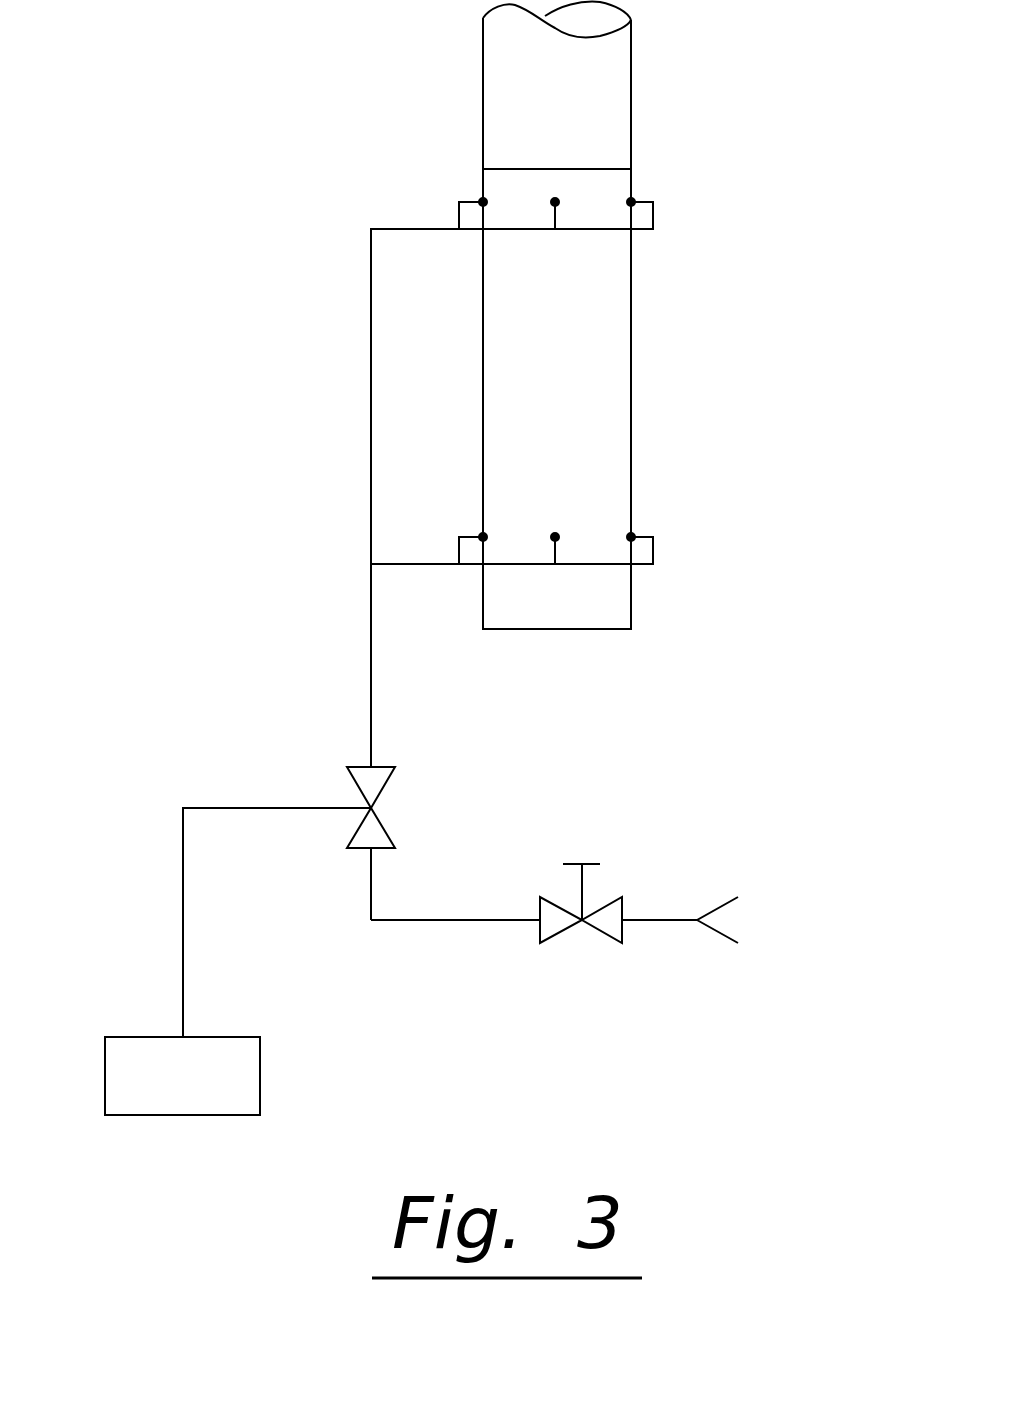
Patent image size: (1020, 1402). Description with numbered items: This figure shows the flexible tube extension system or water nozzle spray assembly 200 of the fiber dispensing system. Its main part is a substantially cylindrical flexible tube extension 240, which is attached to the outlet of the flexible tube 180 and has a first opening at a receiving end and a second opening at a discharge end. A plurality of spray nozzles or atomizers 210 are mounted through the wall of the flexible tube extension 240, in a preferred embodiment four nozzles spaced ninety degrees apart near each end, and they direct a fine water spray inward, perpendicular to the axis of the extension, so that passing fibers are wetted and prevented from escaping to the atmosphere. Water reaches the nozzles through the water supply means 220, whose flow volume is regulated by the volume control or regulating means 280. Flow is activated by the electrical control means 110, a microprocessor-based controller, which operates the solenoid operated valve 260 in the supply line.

The electrical control means 110 is at (257, 1050).
The pipe 180 is at (617, 70).
The flexible tube extension system 200 is at (680, 313).
The spray nozzles or atomizers 210 is at (483, 202).
The water supply means 220 is at (371, 390).
The flexible tube extension 240 is at (610, 377).
The solenoid operated valve 260 is at (383, 828).
The volume control or regulating means 280 is at (608, 932).